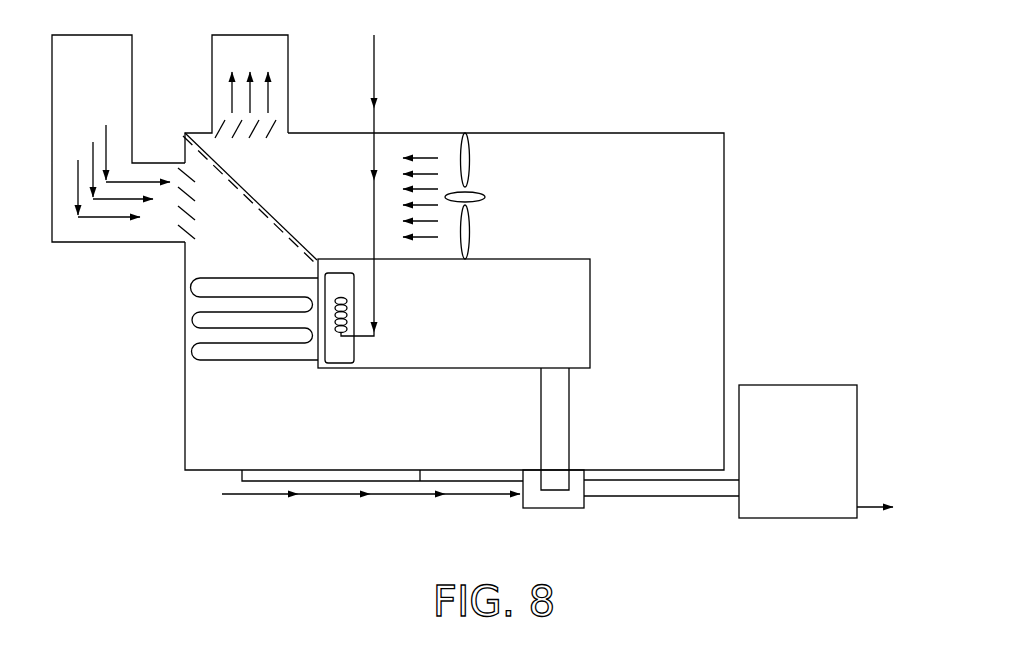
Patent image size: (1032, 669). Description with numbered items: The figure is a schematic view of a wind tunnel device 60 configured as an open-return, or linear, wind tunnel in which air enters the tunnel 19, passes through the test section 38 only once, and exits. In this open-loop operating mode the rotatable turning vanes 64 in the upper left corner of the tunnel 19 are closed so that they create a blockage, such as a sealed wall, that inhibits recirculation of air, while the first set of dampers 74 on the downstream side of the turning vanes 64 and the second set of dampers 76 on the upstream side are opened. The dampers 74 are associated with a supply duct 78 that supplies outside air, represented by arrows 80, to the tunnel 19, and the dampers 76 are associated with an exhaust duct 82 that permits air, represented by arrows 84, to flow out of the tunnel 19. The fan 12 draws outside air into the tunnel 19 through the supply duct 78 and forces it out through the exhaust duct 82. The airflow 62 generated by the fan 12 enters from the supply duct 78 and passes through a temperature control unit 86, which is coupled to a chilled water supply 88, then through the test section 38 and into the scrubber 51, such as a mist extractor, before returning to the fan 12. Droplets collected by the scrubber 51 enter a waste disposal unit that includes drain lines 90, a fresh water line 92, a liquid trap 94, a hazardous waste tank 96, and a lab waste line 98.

The wind tunnel device 60 is at (628, 53).
The tunnel 19 is at (688, 257).
The supply duct 78 is at (106, 77).
The arrows representing supplied air 80 is at (113, 150).
The first set of dampers 74 is at (172, 215).
The second set of dampers 76 is at (223, 122).
The exhaust duct 82 is at (261, 67).
The arrows representing exhaust airflow 84 is at (275, 77).
The rotatable turning vanes 64 is at (258, 188).
The chilled water supply 88 is at (376, 73).
The airflow 62 is at (428, 156).
The fan 12 is at (477, 160).
The test section 38 is at (477, 429).
The temperature control unit 86 is at (240, 368).
The scrubber 51 is at (569, 418).
The drain lines 90 is at (332, 482).
The fresh water line 92 is at (408, 493).
The liquid trap 94 is at (553, 508).
The hazardous waste tank 96 is at (802, 496).
The lab waste line 98 is at (873, 507).